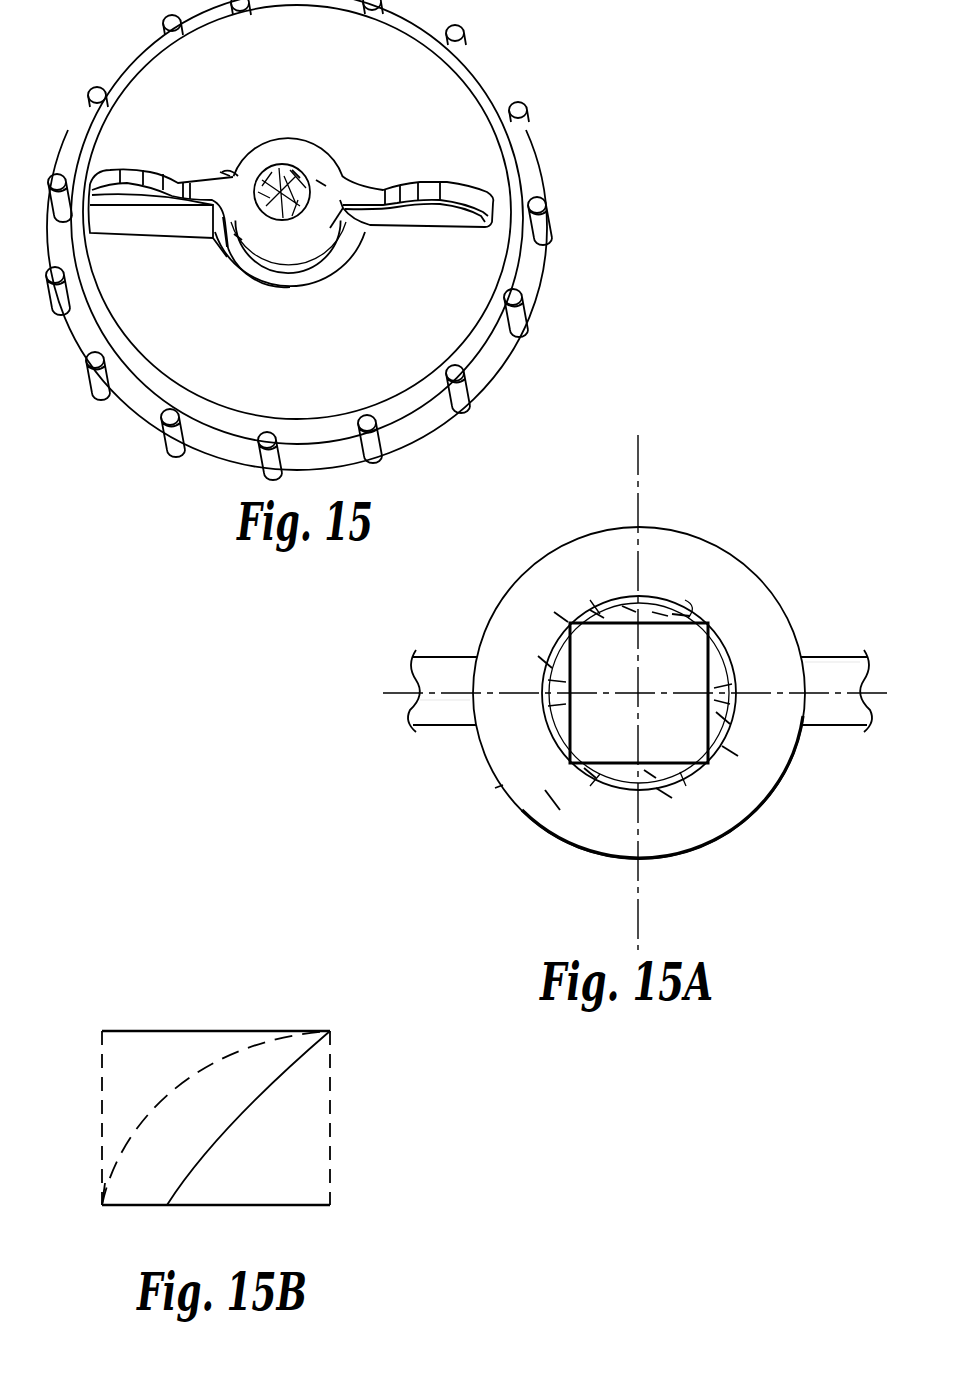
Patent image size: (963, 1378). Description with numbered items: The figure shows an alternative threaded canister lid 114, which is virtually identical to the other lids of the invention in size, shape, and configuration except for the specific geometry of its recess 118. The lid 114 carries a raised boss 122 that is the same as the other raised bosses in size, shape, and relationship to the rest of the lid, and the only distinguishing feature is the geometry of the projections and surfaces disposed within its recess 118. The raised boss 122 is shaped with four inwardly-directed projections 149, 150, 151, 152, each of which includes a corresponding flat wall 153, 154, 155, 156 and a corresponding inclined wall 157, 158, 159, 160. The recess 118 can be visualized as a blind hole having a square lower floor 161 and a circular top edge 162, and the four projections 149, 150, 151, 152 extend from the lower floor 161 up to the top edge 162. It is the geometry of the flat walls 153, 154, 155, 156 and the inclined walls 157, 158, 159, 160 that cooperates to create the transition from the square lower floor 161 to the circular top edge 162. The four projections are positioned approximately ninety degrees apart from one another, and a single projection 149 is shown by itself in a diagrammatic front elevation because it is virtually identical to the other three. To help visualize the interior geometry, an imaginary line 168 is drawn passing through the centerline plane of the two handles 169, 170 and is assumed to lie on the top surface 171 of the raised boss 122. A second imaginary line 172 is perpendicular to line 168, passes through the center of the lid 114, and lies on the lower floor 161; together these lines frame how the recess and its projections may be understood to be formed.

In FIG. 15, the lid 114 is at (552, 94).
In FIG. 15, the recess 118 is at (333, 182).
In FIG. 15, the raised boss 122 is at (314, 212).
In FIG. 15A, the raised boss 122 is at (800, 630).
In FIG. 15A, the projection 149 is at (750, 617).
In FIG. 15B, the projection 149 is at (354, 1041).
In FIG. 15A, the projection 150 is at (650, 770).
In FIG. 15A, the projection 151 is at (503, 784).
In FIG. 15A, the projection 152 is at (660, 617).
In FIG. 15A, the flat wall 153 is at (730, 750).
In FIG. 15B, the flat wall 153 is at (245, 1172).
In FIG. 15A, the flat wall 154 is at (590, 770).
In FIG. 15, the flat wall 155 is at (228, 172).
In FIG. 15A, the flat wall 155 is at (560, 617).
In FIG. 15, the flat wall 156 is at (320, 182).
In FIG. 15A, the flat wall 156 is at (680, 617).
In FIG. 15A, the inclined wall 157 is at (723, 717).
In FIG. 15B, the inclined wall 157 is at (140, 1190).
In FIG. 15A, the inclined wall 158 is at (663, 793).
In FIG. 15, the inclined wall 159 is at (223, 173).
In FIG. 15A, the inclined wall 159 is at (540, 660).
In FIG. 15, the inclined wall 160 is at (298, 178).
In FIG. 15A, the inclined wall 160 is at (630, 610).
In FIG. 15, the square lower floor 161 is at (282, 222).
In FIG. 15A, the square lower floor 161 is at (692, 672).
In FIG. 15, the circular top edge 162 is at (238, 236).
In FIG. 15A, the circular top edge 162 is at (597, 612).
In FIG. 15A, the imaginary line 168 is at (405, 707).
In FIG. 15A, the handle 169 is at (830, 677).
In FIG. 15A, the handle 170 is at (440, 703).
In FIG. 15A, the top surface 171 is at (558, 808).
In FIG. 15A, the imaginary line 172 is at (639, 453).